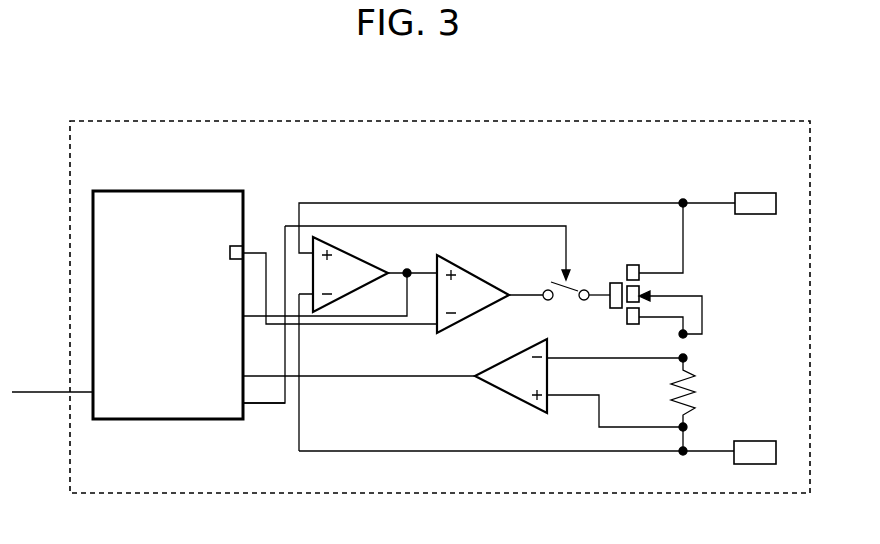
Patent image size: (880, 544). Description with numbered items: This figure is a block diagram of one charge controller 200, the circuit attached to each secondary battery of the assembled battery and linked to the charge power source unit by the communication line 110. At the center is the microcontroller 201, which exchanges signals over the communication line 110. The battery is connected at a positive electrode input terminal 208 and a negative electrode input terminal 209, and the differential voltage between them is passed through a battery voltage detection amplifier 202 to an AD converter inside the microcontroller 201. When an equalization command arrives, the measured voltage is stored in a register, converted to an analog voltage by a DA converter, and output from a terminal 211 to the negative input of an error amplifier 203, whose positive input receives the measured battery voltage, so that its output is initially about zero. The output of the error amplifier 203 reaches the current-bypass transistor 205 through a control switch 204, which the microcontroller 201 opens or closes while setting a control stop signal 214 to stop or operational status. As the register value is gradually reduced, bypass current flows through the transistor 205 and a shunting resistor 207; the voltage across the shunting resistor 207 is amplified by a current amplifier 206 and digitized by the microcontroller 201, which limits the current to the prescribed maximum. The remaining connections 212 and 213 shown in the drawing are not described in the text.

The communication line 110 is at (35, 393).
The charge controller 200 is at (650, 121).
The microcontroller 201 is at (120, 191).
The battery voltage detection amplifier 202 is at (345, 237).
The error amplifier 203 is at (487, 279).
The control switch 204 is at (572, 287).
The current-bypass transistor 205 is at (613, 283).
The current amplifier 206 is at (512, 398).
The shunting resistor 207 is at (695, 382).
The positive electrode input terminal 208 is at (757, 193).
The negative electrode input terminal 209 is at (757, 441).
The terminal 211 is at (233, 246).
The feedback line 212 is at (388, 316).
The signal line 213 is at (355, 377).
The control stop signal 214 is at (265, 404).